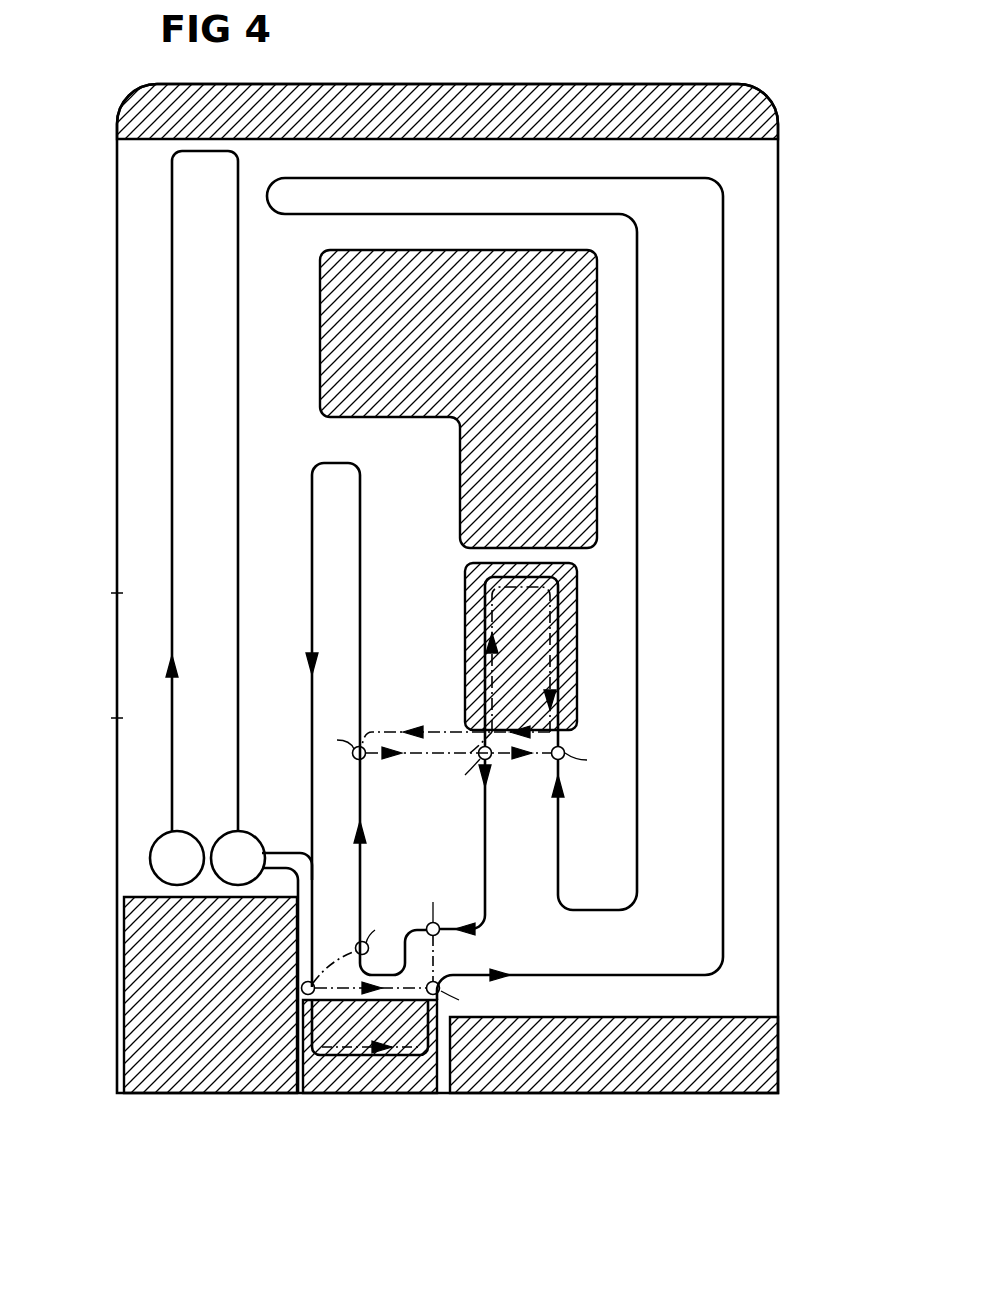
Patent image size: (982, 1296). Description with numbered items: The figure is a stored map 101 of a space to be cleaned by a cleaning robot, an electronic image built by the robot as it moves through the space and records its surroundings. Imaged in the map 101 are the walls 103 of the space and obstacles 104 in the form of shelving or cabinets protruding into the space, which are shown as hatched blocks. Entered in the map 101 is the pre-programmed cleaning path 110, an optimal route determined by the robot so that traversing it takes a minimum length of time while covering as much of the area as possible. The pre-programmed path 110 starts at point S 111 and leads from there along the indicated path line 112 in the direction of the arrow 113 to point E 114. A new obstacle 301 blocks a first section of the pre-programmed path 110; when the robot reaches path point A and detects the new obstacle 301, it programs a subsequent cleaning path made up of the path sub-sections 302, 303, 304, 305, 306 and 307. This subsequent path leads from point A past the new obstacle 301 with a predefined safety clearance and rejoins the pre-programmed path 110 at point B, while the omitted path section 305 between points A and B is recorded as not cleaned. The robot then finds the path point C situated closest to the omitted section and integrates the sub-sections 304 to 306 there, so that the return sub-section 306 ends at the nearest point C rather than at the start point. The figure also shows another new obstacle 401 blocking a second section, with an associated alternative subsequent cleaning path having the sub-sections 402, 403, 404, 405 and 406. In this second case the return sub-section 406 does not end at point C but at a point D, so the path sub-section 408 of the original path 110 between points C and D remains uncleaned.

The map 101 is at (455, 620).
The walls 103 is at (117, 300).
The obstacles 104 is at (122, 110).
The pre-programmed cleaning path 110 is at (723, 560).
The start point S 111 is at (150, 858).
The path line 112 is at (150, 491).
The arrow 113 is at (172, 662).
The end point E 114 is at (255, 836).
The new obstacle 301 is at (525, 654).
The path sub-section 302 is at (492, 764).
The path sub-section 303 is at (492, 928).
The path sub-section 304 is at (426, 760).
The omitted path section 305 is at (485, 672).
The return sub-section 306 is at (552, 763).
The path sub-section 307 is at (360, 615).
The another new obstacle 401 is at (325, 1093).
The path sub-section 402 is at (381, 1067).
The path sub-section 403 is at (445, 925).
The path sub-section 404 is at (420, 946).
The path sub-section 405 is at (400, 1060).
The return sub-section 406 is at (357, 944).
The uncleaned path sub-section 408 is at (393, 968).